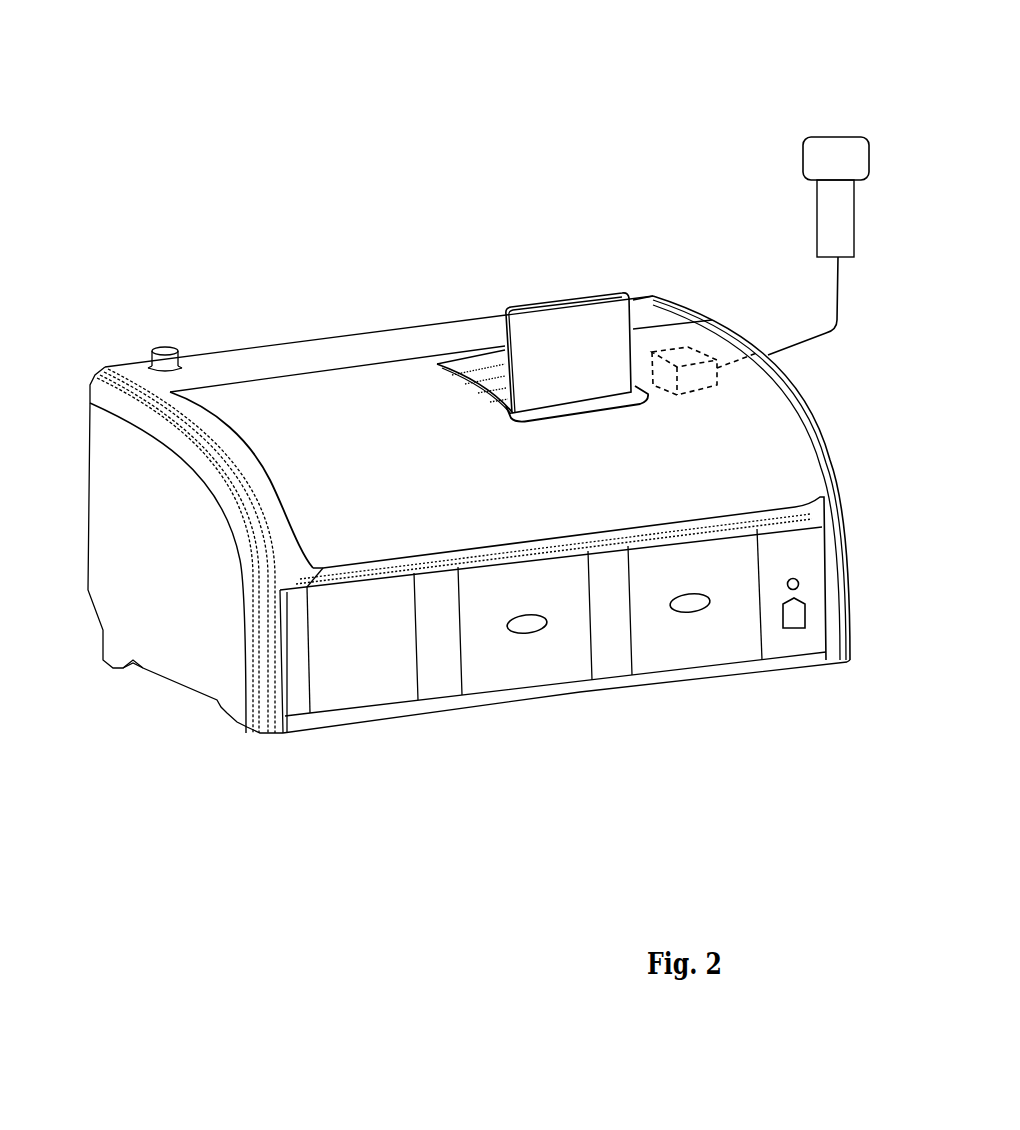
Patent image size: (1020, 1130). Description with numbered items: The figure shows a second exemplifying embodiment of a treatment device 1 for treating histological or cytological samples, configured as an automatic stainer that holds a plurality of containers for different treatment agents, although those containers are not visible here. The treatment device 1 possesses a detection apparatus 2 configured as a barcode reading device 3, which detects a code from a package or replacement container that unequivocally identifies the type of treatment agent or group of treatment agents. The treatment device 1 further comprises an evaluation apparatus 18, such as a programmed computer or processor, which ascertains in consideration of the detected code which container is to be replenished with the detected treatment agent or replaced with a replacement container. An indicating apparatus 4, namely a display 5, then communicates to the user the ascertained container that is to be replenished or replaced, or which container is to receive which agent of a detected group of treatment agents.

The treatment device 1 is at (318, 180).
The detection apparatus 2 is at (785, 112).
The barcode reading device 3 is at (830, 199).
The indicating apparatus 4 is at (523, 243).
The display 5 is at (548, 327).
The evaluation apparatus 18 is at (690, 390).